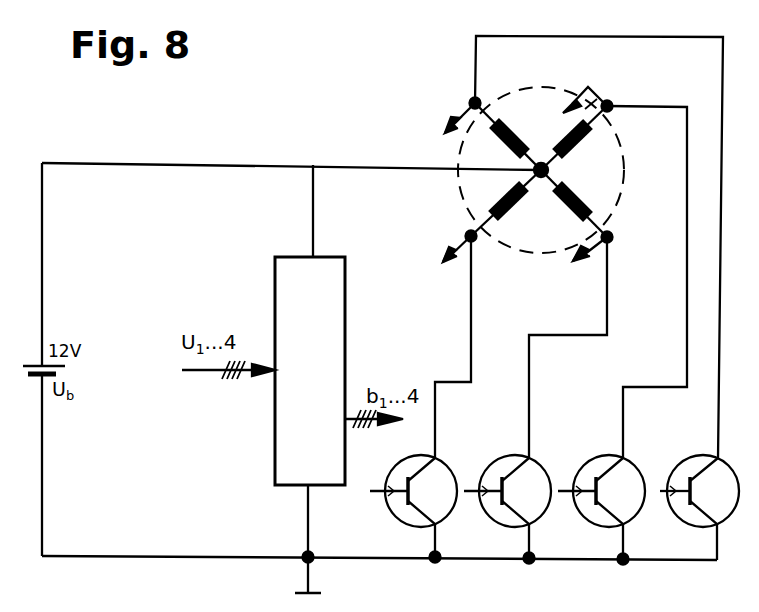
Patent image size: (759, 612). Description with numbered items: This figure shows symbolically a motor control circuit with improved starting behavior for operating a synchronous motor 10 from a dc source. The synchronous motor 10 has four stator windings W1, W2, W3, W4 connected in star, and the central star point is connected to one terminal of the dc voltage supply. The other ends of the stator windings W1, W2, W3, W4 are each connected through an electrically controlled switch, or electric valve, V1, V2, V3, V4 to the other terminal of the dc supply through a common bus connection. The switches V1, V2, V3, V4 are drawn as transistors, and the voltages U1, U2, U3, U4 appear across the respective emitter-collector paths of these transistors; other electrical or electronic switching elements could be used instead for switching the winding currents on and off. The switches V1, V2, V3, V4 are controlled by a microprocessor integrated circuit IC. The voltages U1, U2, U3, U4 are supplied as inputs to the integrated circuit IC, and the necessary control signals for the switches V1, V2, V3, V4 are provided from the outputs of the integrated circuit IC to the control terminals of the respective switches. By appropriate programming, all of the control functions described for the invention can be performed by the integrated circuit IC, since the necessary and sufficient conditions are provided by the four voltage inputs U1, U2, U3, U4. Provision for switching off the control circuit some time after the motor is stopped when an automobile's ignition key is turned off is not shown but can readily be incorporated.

The synchronous motor 10 is at (478, 185).
The stator winding W1 is at (511, 195).
The stator winding W2 is at (578, 192).
The stator winding W3 is at (585, 142).
The stator winding W4 is at (497, 120).
The control voltage U1 is at (446, 252).
The control voltage U2 is at (580, 257).
The control voltage U3 is at (519, 93).
The control voltage U4 is at (446, 127).
The electrically controlled switch V1 is at (413, 509).
The electrically controlled switch V2 is at (507, 509).
The electrically controlled switch V3 is at (601, 510).
The electrically controlled switch V4 is at (699, 507).
The microprocessor integrated circuit IC is at (310, 325).